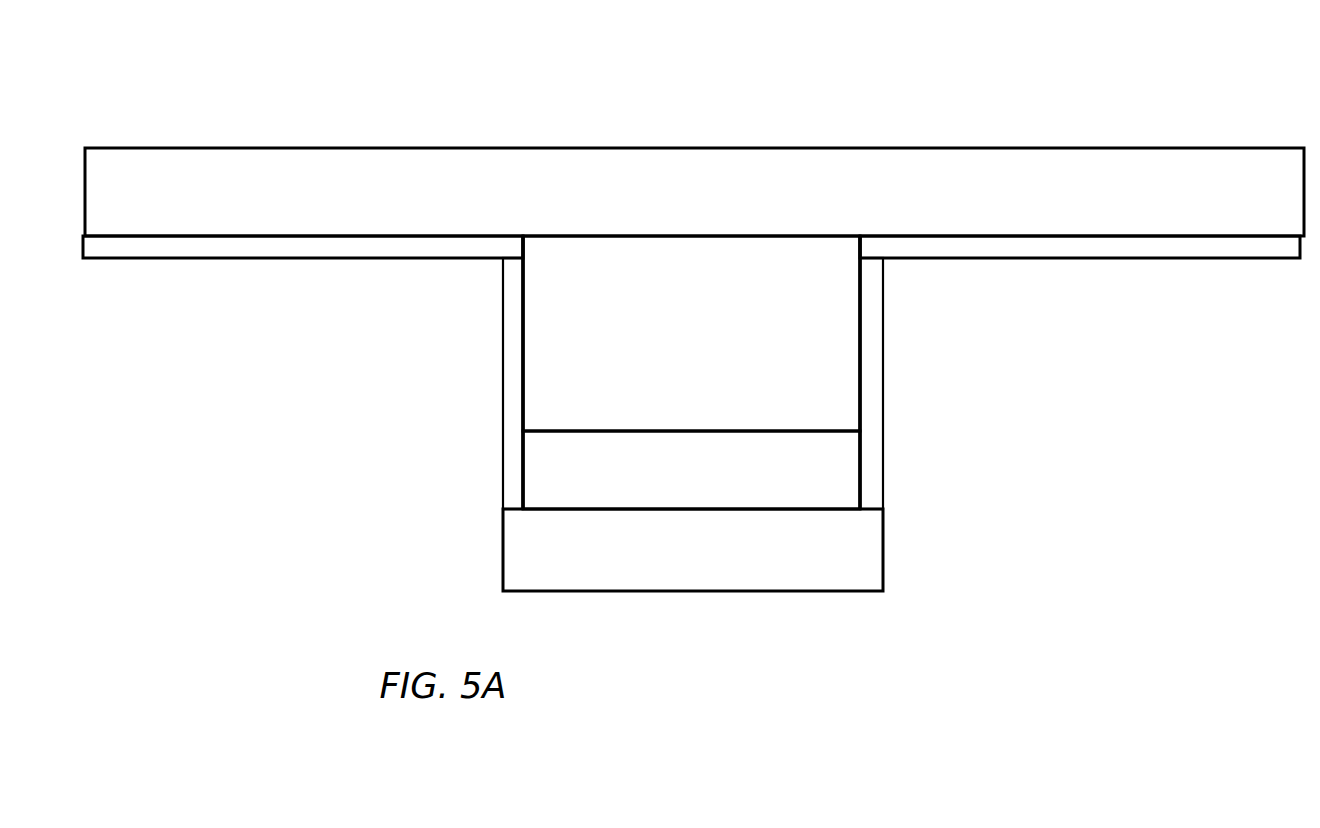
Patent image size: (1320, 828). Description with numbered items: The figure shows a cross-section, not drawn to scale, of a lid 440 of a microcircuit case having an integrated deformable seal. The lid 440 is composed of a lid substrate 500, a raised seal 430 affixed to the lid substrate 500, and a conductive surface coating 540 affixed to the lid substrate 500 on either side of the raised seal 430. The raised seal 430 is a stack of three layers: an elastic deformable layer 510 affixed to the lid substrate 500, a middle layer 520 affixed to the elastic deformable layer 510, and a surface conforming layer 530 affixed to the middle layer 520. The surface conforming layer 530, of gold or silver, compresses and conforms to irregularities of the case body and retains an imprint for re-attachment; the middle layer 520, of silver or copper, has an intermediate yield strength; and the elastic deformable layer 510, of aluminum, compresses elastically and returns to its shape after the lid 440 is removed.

The lid 440 is at (693, 364).
The lid substrate 500 is at (673, 219).
The elastic deformable layer 510 is at (668, 361).
The middle layer 520 is at (668, 499).
The surface conforming layer 530 is at (693, 550).
The conductive surface coating 540 is at (347, 245).
The raised seal 430 is at (693, 463).